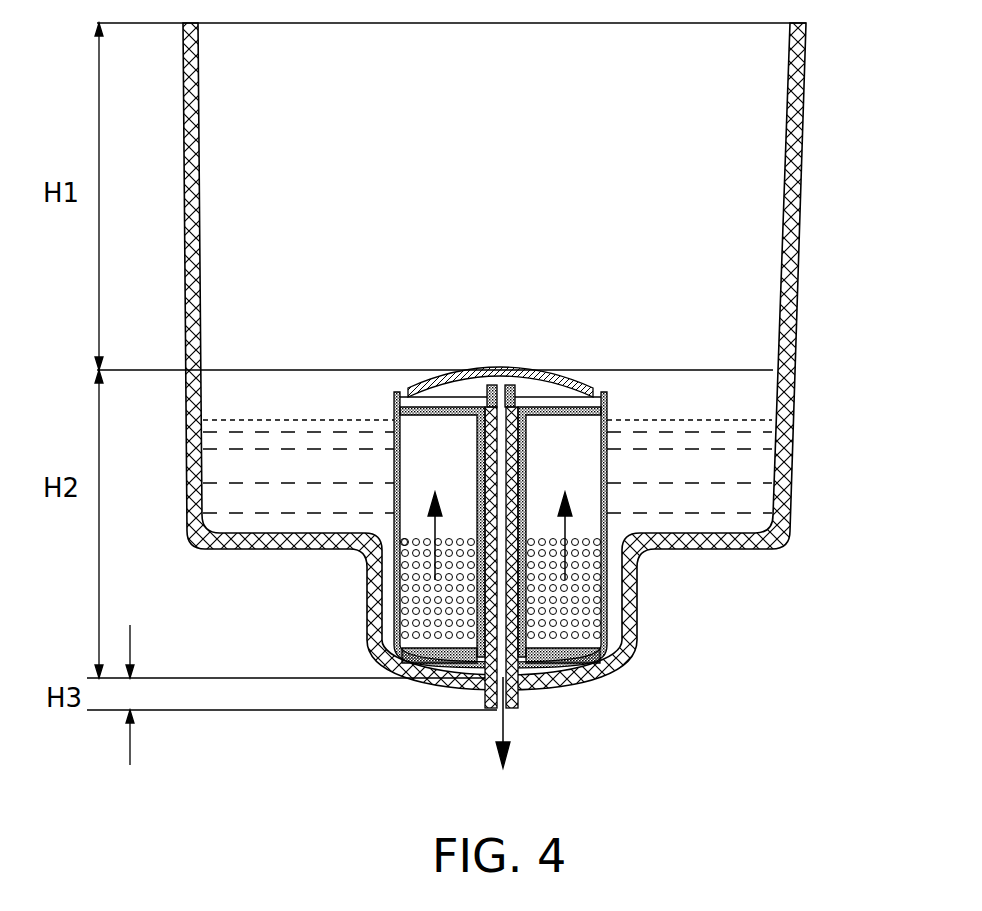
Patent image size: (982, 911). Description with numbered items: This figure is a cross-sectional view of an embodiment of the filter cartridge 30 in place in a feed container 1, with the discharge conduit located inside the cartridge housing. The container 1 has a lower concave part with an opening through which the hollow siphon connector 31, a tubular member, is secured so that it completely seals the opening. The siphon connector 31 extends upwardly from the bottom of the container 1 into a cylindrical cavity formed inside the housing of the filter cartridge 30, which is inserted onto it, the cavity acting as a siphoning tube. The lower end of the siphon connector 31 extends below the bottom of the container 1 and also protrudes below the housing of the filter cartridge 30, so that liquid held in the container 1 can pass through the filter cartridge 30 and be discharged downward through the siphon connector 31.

The container 1 is at (743, 135).
The filter cartridge 30 is at (610, 549).
The siphon connector 31 is at (503, 423).